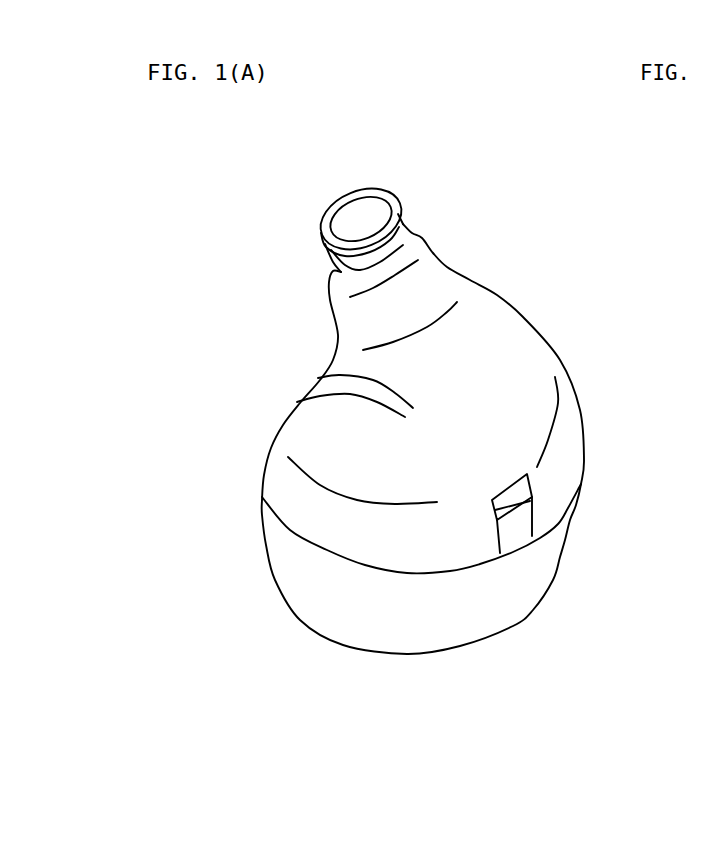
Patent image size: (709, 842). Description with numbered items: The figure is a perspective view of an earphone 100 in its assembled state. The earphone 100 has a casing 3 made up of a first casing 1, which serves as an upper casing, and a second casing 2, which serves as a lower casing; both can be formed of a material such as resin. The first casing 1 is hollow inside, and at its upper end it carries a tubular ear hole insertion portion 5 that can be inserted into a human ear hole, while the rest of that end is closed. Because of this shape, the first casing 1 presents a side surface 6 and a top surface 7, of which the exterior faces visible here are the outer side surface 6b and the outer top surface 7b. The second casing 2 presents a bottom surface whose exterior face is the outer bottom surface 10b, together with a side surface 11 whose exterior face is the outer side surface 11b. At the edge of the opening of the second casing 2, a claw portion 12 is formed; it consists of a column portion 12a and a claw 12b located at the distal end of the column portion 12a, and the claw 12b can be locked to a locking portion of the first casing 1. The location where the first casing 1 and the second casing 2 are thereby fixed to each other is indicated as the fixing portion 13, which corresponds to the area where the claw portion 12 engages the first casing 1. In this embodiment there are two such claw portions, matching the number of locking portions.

The earphone 100 is at (212, 156).
The ear hole insertion portion 5 is at (401, 202).
The top surface 7 is at (318, 378).
The outer top surface 7b is at (297, 402).
The casing 3 is at (358, 515).
The first casing 1 is at (281, 487).
The second casing 2 is at (281, 547).
The side surface 6 is at (562, 467).
The outer side surface 6b is at (550, 483).
The side surface 11 is at (558, 528).
The outer side surface 11b is at (558, 540).
The claw portion 12 is at (579, 560).
The column portion 12a is at (538, 516).
The claw 12b is at (515, 530).
The fixing portion 13 is at (522, 554).
The outer bottom surface 10b is at (368, 657).